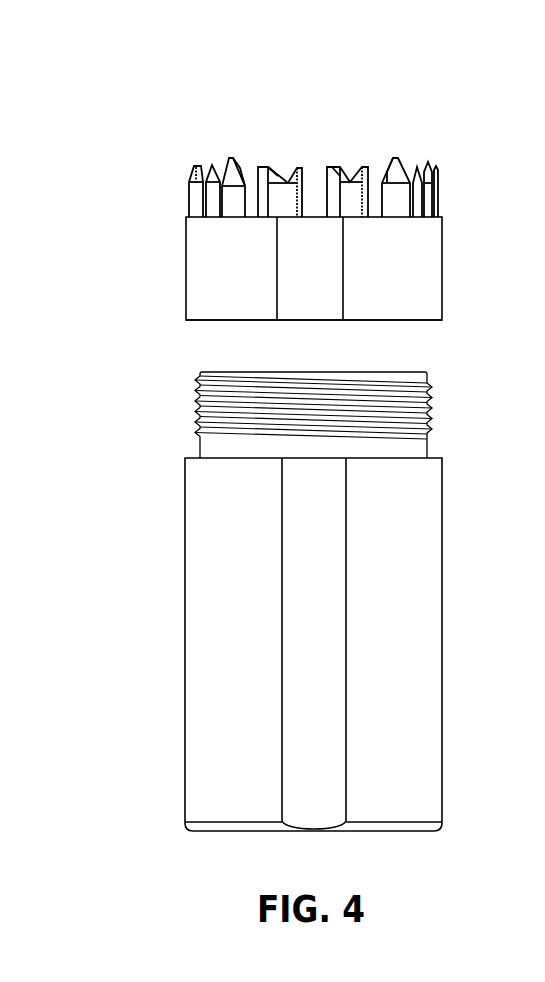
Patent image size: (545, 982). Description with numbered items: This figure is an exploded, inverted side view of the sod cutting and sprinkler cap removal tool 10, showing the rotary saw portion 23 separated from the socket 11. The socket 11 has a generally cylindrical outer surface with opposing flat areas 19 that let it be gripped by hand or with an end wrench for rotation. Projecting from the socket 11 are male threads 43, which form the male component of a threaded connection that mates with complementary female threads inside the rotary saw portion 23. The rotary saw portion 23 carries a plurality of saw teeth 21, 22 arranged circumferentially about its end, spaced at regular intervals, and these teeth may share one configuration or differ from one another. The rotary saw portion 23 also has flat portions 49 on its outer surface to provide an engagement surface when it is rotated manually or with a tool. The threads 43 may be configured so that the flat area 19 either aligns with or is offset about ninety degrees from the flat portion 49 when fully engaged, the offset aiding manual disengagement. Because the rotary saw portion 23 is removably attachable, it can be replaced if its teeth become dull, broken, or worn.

The sod cutting and sprinkler cap removal tool 10 is at (286, 63).
The socket 11 is at (185, 620).
The flat area 19 is at (312, 831).
The saw tooth 21 is at (226, 162).
The saw tooth 22 is at (340, 168).
The rotary saw portion 23 is at (186, 268).
The male threads 43 is at (440, 405).
The flat portion 49 is at (310, 320).